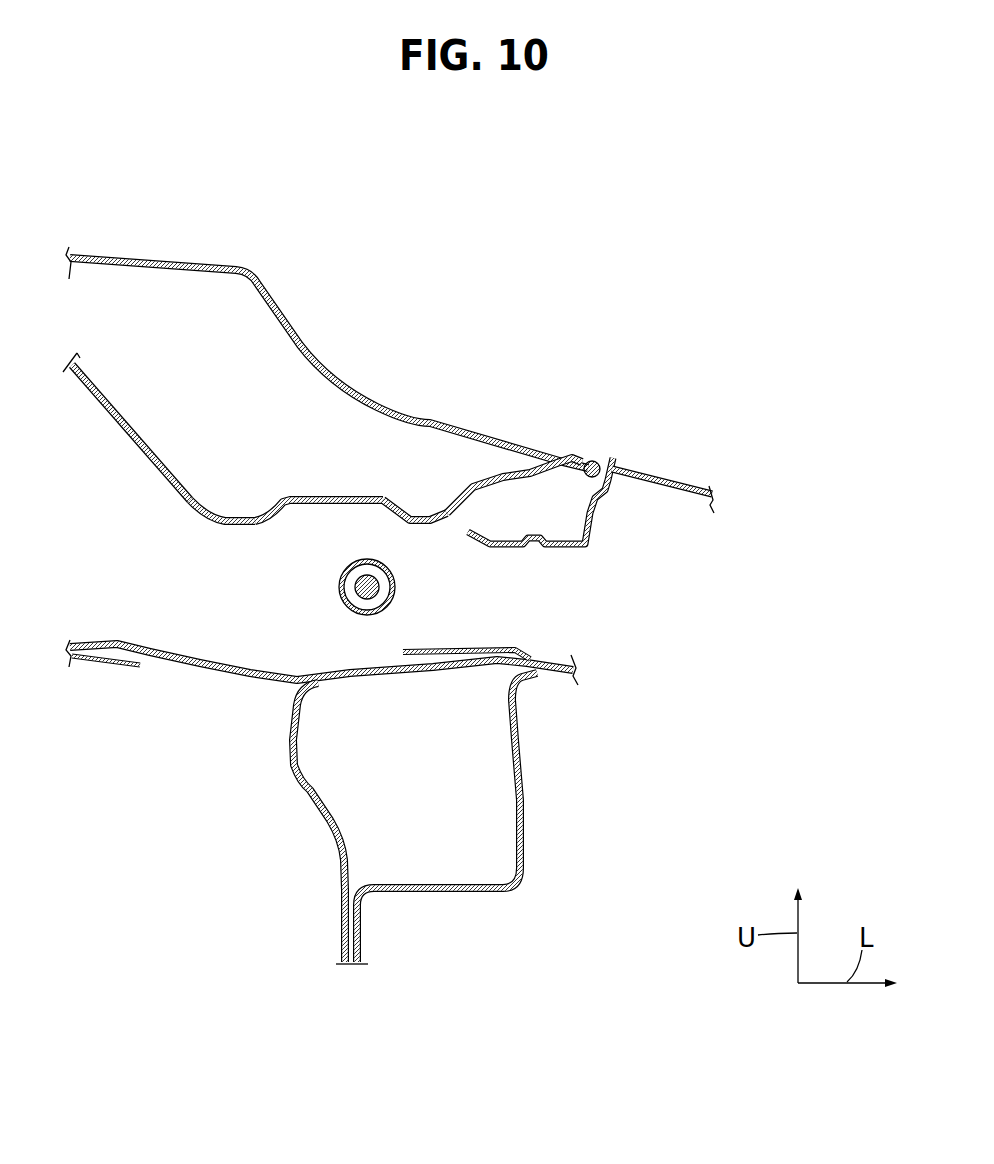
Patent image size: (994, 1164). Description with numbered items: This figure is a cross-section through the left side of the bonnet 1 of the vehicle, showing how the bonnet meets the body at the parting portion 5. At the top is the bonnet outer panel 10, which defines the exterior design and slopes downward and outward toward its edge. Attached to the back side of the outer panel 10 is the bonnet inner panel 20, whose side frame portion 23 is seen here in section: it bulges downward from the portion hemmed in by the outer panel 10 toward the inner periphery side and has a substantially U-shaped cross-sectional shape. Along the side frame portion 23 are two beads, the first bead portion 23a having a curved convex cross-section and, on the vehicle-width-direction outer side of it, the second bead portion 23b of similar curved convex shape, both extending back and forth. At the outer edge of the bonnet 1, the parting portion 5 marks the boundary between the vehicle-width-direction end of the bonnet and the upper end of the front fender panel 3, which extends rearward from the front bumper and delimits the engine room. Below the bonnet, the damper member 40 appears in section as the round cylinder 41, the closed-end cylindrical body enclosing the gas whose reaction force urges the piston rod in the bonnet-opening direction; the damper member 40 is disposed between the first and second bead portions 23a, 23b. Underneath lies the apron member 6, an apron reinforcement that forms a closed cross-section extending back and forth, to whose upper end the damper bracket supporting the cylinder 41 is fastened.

The bonnet 1 is at (270, 248).
The bonnet outer panel 10 is at (285, 322).
The bonnet inner panel 20 is at (318, 486).
The side frame portion 23 is at (136, 455).
The first bead portion 23a is at (418, 530).
The second bead portion 23b is at (217, 528).
The parting portion 5 is at (612, 460).
The front fender panel 3 is at (692, 480).
The damper member 40 is at (315, 607).
The cylinder 41 is at (330, 585).
The apron member 6 is at (530, 664).